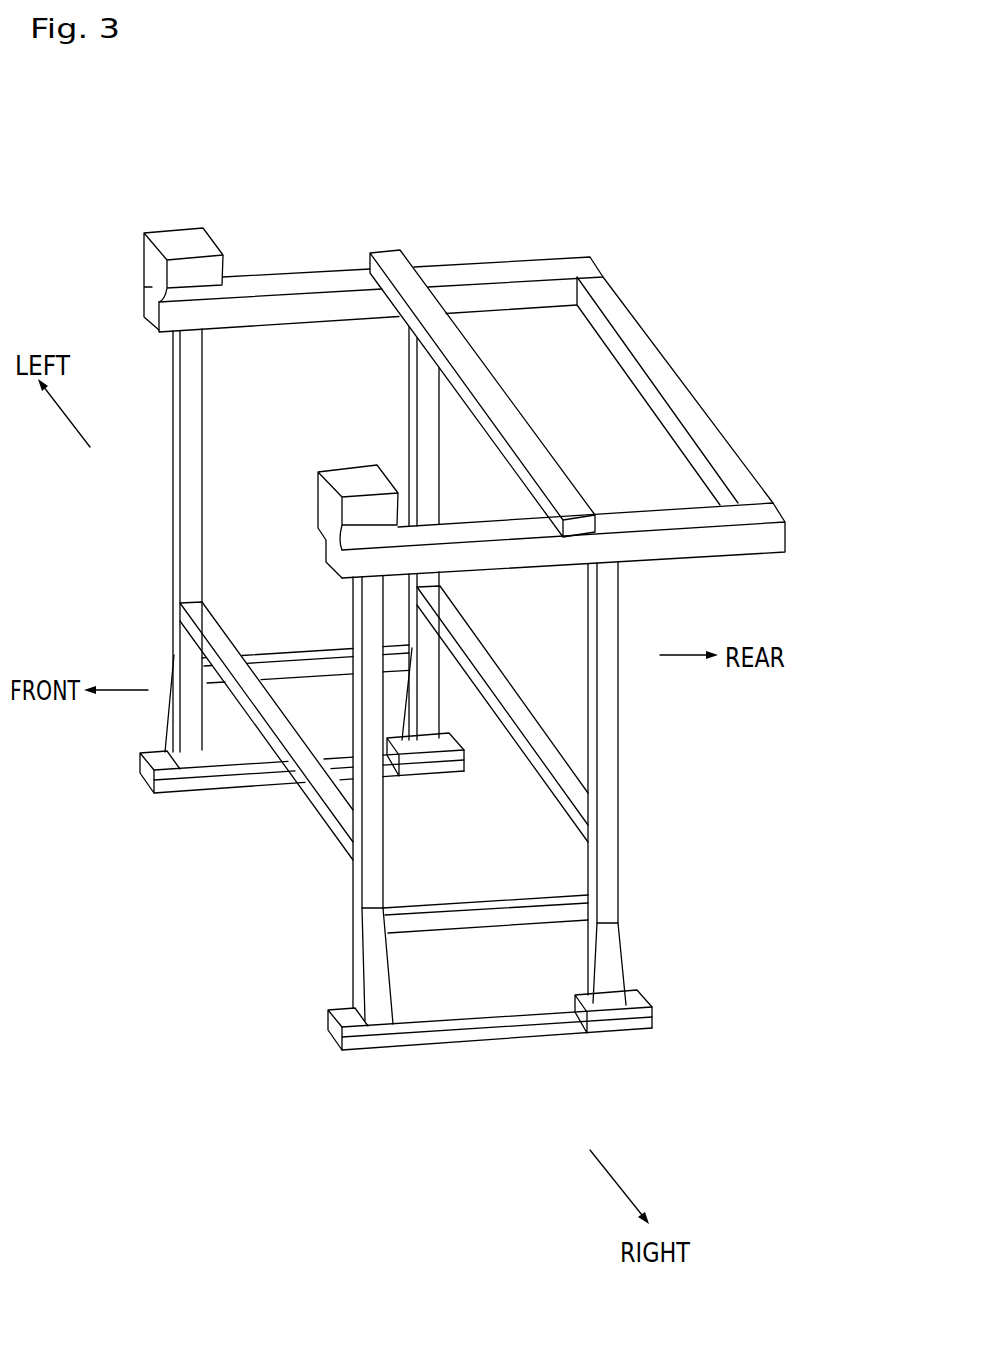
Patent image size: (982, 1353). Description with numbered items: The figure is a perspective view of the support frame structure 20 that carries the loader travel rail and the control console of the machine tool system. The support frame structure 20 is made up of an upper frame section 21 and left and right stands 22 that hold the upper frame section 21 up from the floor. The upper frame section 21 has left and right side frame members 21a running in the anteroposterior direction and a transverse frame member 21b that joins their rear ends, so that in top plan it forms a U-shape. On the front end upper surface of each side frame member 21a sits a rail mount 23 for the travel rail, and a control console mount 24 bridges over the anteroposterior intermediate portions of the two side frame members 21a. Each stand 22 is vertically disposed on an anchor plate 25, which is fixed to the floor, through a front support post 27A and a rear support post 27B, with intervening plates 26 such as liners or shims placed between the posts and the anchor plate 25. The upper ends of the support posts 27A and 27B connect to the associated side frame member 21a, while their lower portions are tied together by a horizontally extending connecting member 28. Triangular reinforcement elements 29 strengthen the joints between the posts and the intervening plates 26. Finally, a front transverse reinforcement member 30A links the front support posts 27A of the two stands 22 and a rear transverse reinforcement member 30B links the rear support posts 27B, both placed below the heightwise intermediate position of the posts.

The support frame structure 20 is at (376, 207).
The upper frame section 21 is at (672, 336).
The side frame member 21a is at (497, 262).
The transverse frame member 21b is at (697, 400).
The stand 22 is at (152, 500).
The rail mount 23 is at (168, 226).
The control console mount 24 is at (540, 430).
The anchor plate 25 is at (495, 1036).
The intervening plate 26 is at (656, 998).
The front support post 27A is at (397, 815).
The rear support post 27B is at (608, 862).
The connecting member 28 is at (528, 917).
The reinforcement element 29 is at (626, 952).
The front transverse reinforcement member 30A is at (305, 797).
The rear transverse reinforcement member 30B is at (522, 725).